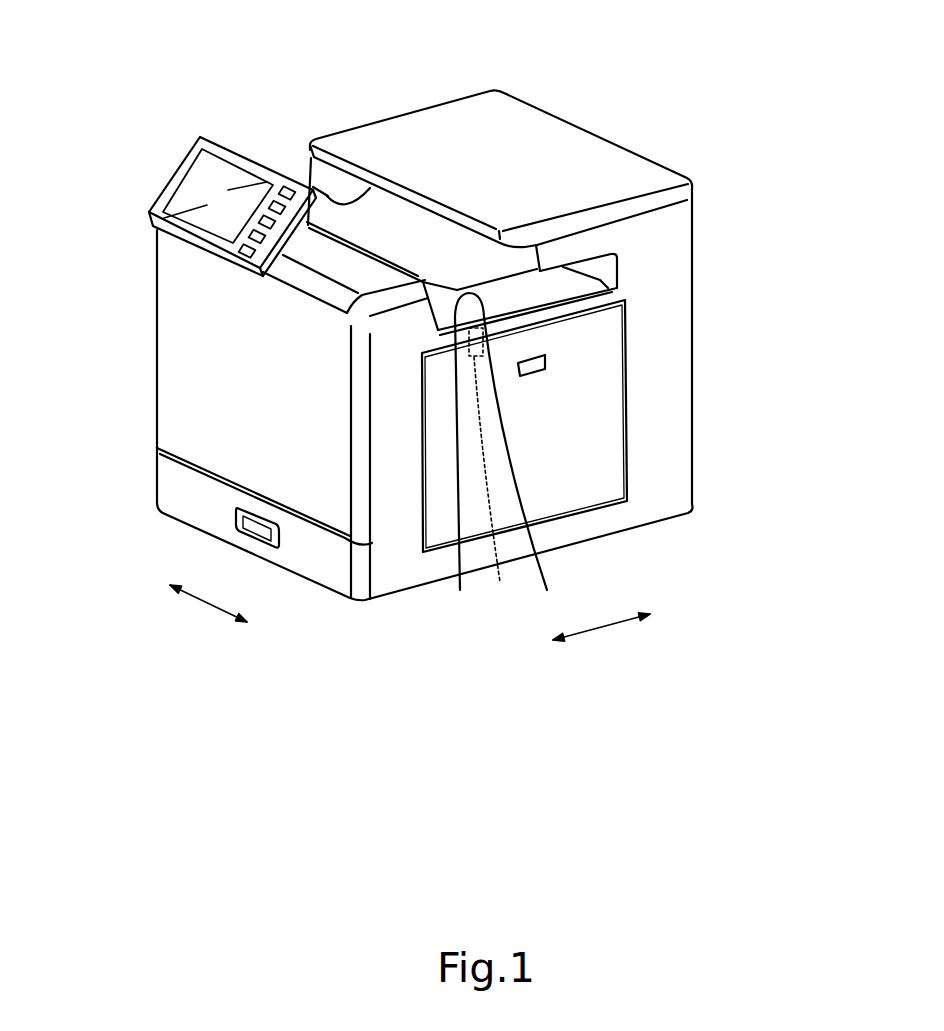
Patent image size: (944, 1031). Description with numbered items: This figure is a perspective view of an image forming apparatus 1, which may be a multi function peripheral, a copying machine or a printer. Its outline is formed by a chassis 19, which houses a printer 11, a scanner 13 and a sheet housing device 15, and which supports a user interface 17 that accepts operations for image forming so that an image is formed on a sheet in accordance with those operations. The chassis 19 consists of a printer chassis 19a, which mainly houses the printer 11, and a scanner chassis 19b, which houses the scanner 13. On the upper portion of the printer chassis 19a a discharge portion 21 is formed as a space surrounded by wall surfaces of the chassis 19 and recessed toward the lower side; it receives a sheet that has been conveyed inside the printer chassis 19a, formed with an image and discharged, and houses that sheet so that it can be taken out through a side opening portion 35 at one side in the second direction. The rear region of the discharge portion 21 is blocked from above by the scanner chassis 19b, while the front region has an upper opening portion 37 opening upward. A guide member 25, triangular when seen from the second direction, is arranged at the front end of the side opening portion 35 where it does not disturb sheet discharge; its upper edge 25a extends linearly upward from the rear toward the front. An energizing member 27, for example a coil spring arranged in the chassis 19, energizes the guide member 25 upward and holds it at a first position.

The image forming apparatus 1 is at (245, 66).
The printer 11 is at (626, 417).
The scanner 13 is at (459, 100).
The sheet housing device 15 is at (182, 489).
The user interface 17 is at (178, 158).
The chassis 19 is at (787, 104).
The printer chassis 19a is at (680, 308).
The scanner chassis 19b is at (650, 163).
The discharge portion 21 is at (420, 266).
The guide member 25 is at (460, 590).
The upper edge 25a is at (547, 590).
The energizing member 27 is at (500, 582).
The side opening portion 35 is at (565, 300).
The upper opening portion 37 is at (370, 188).